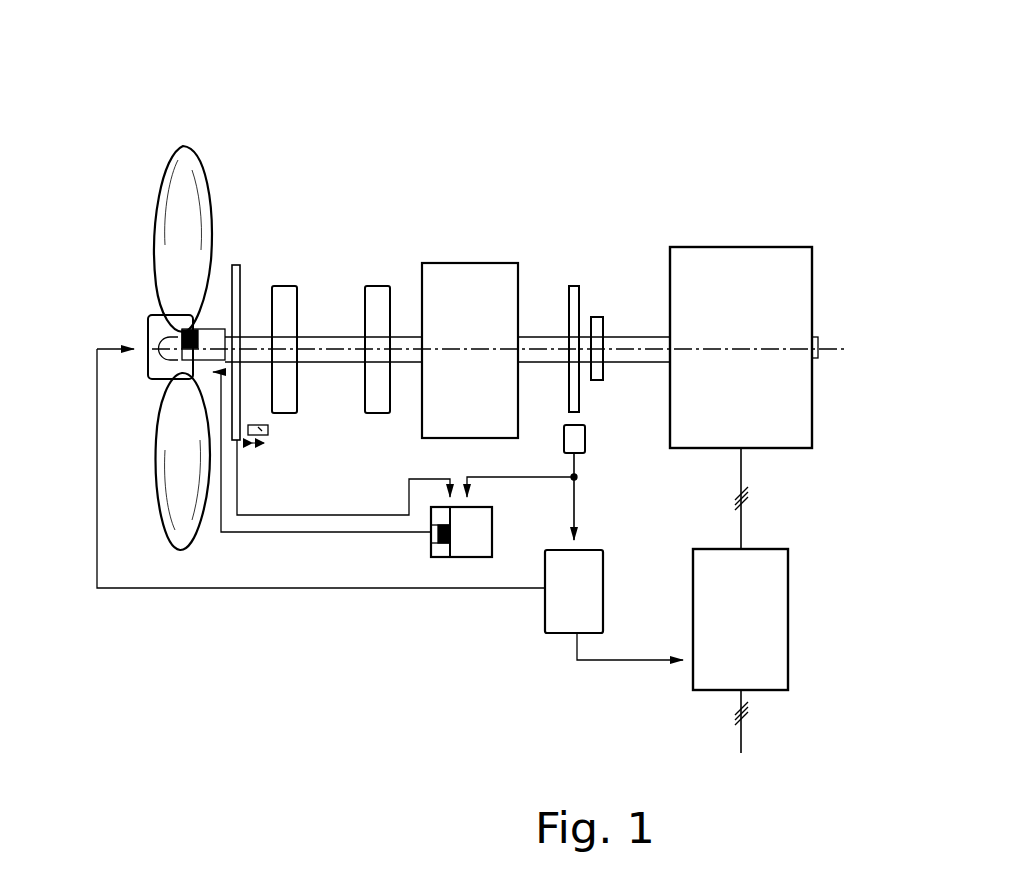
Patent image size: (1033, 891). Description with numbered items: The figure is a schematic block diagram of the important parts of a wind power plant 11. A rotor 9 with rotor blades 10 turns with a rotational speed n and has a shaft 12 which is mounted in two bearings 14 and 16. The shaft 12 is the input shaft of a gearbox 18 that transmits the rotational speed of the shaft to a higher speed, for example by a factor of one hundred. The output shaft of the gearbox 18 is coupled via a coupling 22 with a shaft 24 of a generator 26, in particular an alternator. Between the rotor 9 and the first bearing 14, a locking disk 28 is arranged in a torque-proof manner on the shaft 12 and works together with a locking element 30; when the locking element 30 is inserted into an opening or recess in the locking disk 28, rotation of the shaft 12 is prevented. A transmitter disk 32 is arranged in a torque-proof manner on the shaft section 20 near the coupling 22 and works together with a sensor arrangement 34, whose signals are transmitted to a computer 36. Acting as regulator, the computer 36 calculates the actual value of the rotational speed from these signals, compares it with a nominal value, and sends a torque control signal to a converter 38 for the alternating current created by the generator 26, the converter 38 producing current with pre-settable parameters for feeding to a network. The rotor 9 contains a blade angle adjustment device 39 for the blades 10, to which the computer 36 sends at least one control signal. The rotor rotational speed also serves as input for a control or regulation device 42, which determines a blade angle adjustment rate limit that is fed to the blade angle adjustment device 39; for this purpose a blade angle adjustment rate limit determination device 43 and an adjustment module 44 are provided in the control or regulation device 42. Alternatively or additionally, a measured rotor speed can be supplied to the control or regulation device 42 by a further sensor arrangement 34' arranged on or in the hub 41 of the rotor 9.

The rotor 9 is at (122, 252).
The rotor blades 10 is at (186, 180).
The wind power plant 11 is at (490, 132).
The shaft 12 is at (327, 343).
The bearing 14 is at (283, 300).
The bearing 16 is at (378, 298).
The gearbox 18 is at (460, 290).
The shaft section 20 is at (538, 343).
The coupling 22 is at (593, 317).
The shaft 24 is at (628, 337).
The generator 26 is at (717, 258).
The locking disk 28 is at (238, 440).
The locking element 30 is at (270, 426).
The transmitter disk 32 is at (575, 287).
The sensor arrangement 34 is at (555, 482).
The sensor arrangement 34' is at (229, 276).
The computer 36 is at (584, 560).
The converter 38 is at (770, 598).
The blade angle adjustment device 39 is at (150, 318).
The hub 41 is at (172, 352).
The control or regulation device 42 is at (458, 545).
The blade angle adjustment rate limit determination device 43 is at (440, 547).
The adjustment module 44 is at (432, 537).